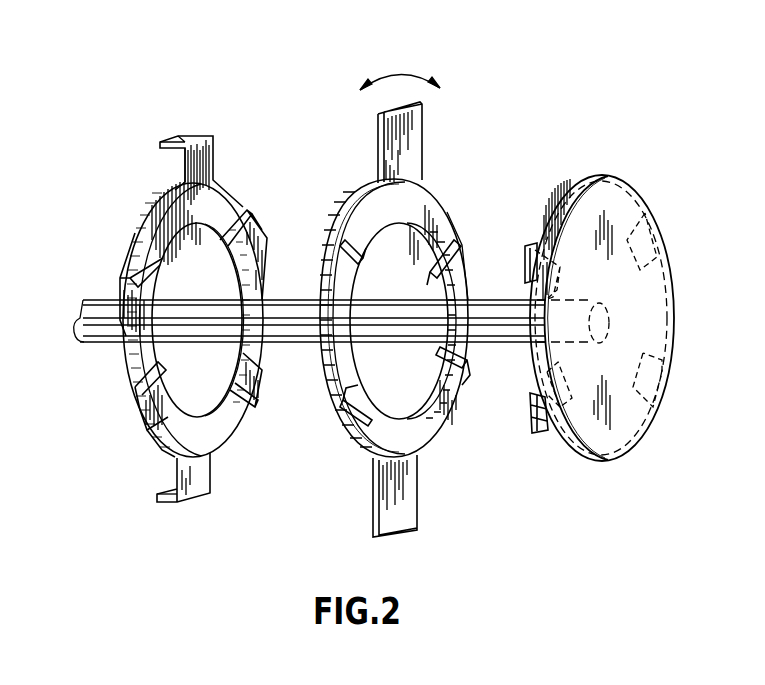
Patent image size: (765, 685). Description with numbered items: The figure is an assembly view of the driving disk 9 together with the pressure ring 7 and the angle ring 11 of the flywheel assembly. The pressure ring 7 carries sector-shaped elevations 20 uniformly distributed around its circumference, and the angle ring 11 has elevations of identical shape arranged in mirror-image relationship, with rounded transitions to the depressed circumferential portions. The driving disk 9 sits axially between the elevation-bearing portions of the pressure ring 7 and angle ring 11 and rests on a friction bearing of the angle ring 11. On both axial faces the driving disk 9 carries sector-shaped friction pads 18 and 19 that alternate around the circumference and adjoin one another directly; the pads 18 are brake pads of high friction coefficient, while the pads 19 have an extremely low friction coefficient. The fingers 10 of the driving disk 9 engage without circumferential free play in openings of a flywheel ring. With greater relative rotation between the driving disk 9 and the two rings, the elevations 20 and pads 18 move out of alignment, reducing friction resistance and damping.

The pressure ring 7 is at (191, 123).
The driving disk 9 is at (397, 62).
The fingers 10 is at (413, 137).
The angle ring 11 is at (604, 164).
The friction pads 18 is at (353, 387).
The friction pads 19 is at (412, 447).
The sector-shaped elevations 20 is at (258, 236).